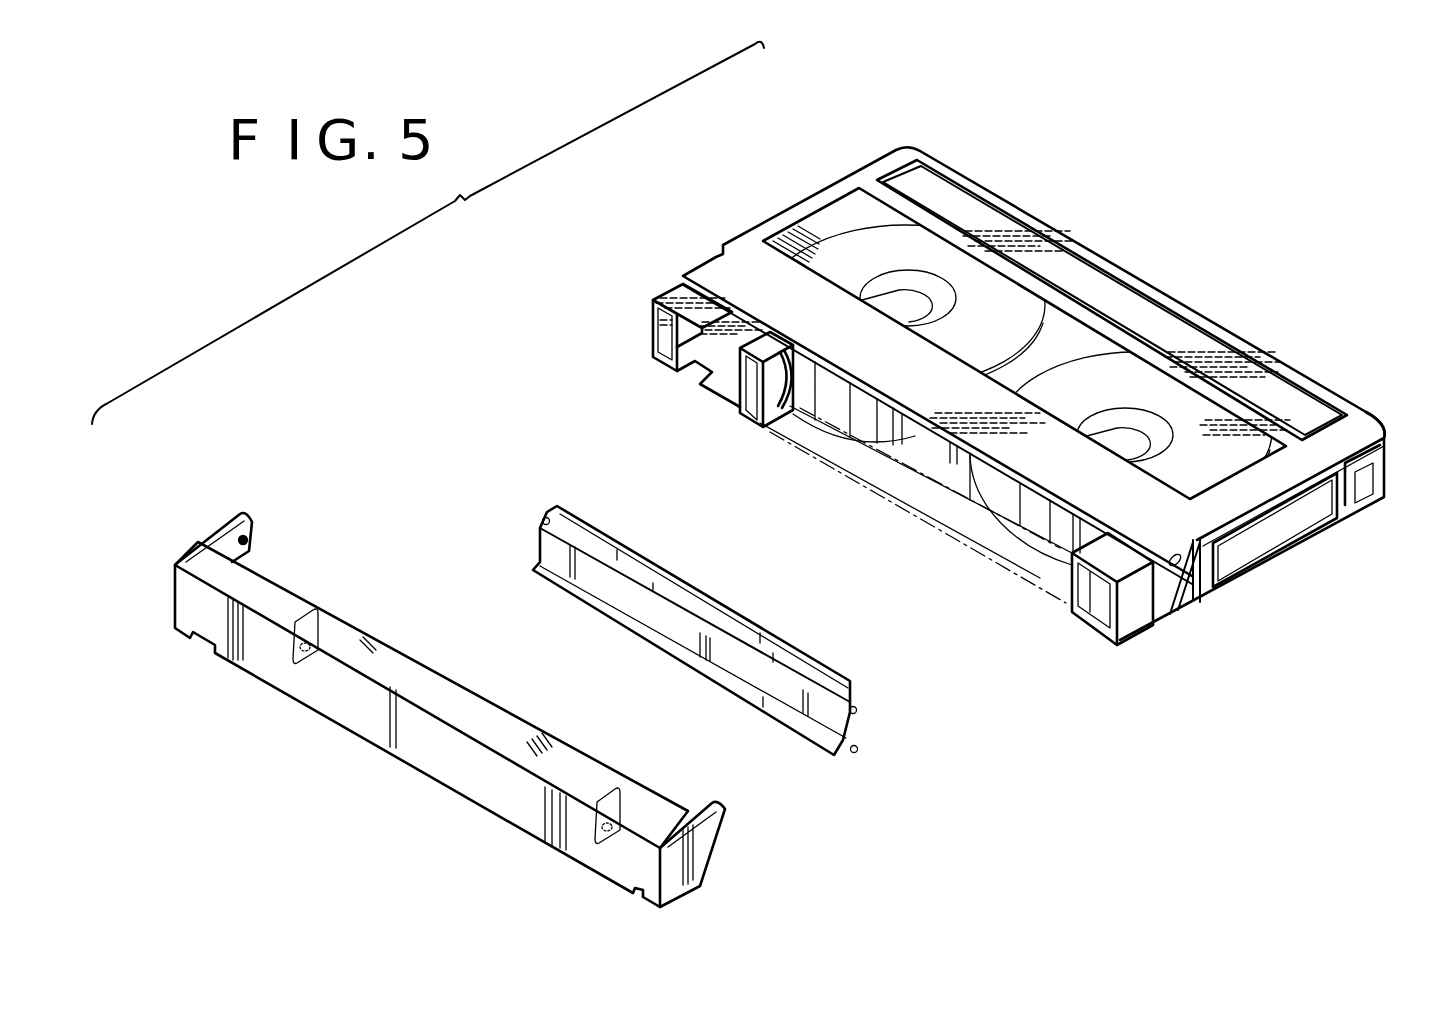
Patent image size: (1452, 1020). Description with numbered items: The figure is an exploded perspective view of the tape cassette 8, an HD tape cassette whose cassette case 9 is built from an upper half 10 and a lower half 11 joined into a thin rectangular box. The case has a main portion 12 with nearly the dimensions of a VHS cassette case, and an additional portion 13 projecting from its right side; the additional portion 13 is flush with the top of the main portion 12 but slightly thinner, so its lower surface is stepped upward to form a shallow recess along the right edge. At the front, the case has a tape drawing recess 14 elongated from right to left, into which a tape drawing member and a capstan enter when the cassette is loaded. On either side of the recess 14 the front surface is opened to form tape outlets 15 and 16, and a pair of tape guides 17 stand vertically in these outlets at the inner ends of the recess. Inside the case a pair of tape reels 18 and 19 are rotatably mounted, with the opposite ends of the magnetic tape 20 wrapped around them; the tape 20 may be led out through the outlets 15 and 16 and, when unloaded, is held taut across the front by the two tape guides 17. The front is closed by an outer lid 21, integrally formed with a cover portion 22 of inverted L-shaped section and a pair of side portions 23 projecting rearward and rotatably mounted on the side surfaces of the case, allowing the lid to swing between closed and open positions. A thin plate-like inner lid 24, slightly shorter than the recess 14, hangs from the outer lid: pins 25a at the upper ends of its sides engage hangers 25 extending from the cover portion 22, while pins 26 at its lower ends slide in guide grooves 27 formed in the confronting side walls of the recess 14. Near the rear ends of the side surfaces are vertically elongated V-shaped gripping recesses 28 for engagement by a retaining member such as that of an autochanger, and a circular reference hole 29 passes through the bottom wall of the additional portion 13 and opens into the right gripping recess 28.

The tape cassette 8 is at (424, 366).
The cassette case 9 is at (1375, 426).
The upper half 10 is at (737, 235).
The lower half 11 is at (1270, 567).
The main portion 12 is at (781, 212).
The additional portion 13 is at (1200, 601).
The tape drawing recess 14 is at (937, 453).
The tape outlet 15 is at (720, 384).
The tape outlet 16 is at (1103, 620).
The tape guide 17 is at (1083, 600).
The tape reel 18 is at (1243, 430).
The tape reel 19 is at (862, 230).
The magnetic tape 20 is at (977, 553).
The outer lid 21 is at (323, 720).
The cover portion 22 is at (413, 733).
The side portion 23 is at (233, 520).
The inner lid 24 is at (653, 647).
The hanger 25 is at (293, 648).
The pin 25a is at (547, 528).
The pin 26 is at (858, 747).
The guide groove 27 is at (791, 417).
The gripping recess 28 is at (1368, 485).
The reference hole 29 is at (1353, 504).